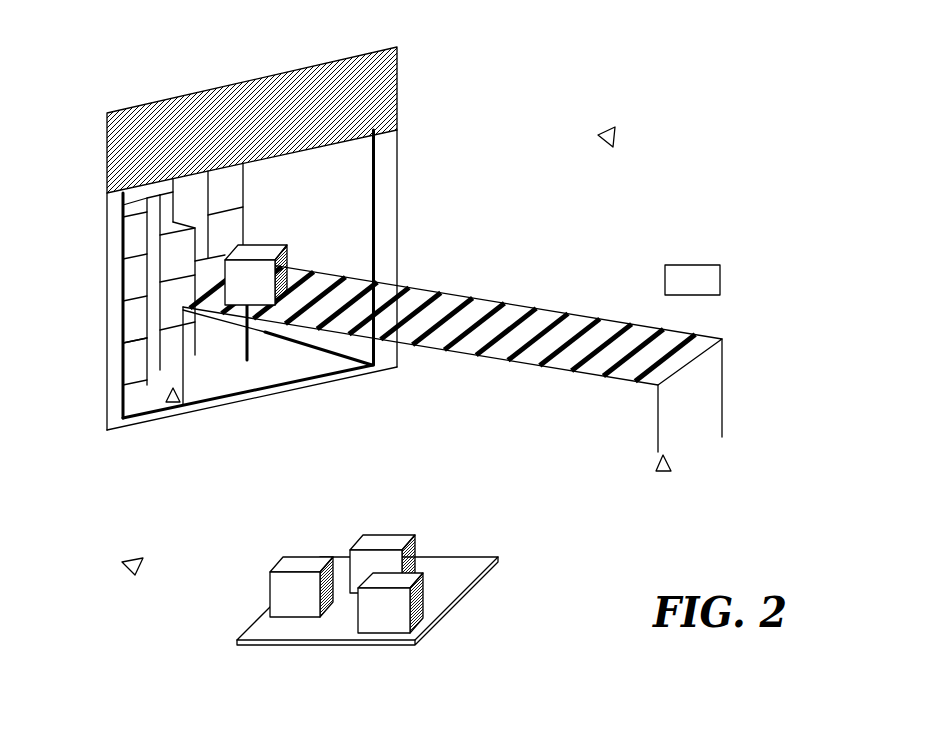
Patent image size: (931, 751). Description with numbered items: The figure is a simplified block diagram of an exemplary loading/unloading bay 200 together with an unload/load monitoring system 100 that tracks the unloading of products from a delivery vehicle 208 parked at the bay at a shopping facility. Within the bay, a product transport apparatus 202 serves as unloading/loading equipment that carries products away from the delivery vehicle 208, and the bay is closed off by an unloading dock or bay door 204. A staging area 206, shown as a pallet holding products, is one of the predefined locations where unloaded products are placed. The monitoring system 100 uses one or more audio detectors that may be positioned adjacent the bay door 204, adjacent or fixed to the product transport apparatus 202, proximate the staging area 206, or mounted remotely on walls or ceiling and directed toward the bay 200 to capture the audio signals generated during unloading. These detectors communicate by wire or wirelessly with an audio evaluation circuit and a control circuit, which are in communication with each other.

The unload/load monitoring system 100 is at (688, 205).
The loading/unloading bay 200 is at (504, 74).
The product transport apparatus 202 is at (453, 297).
The unloading dock or bay door 204 is at (237, 93).
The staging area 206 is at (531, 561).
The delivery vehicle 208 is at (375, 210).